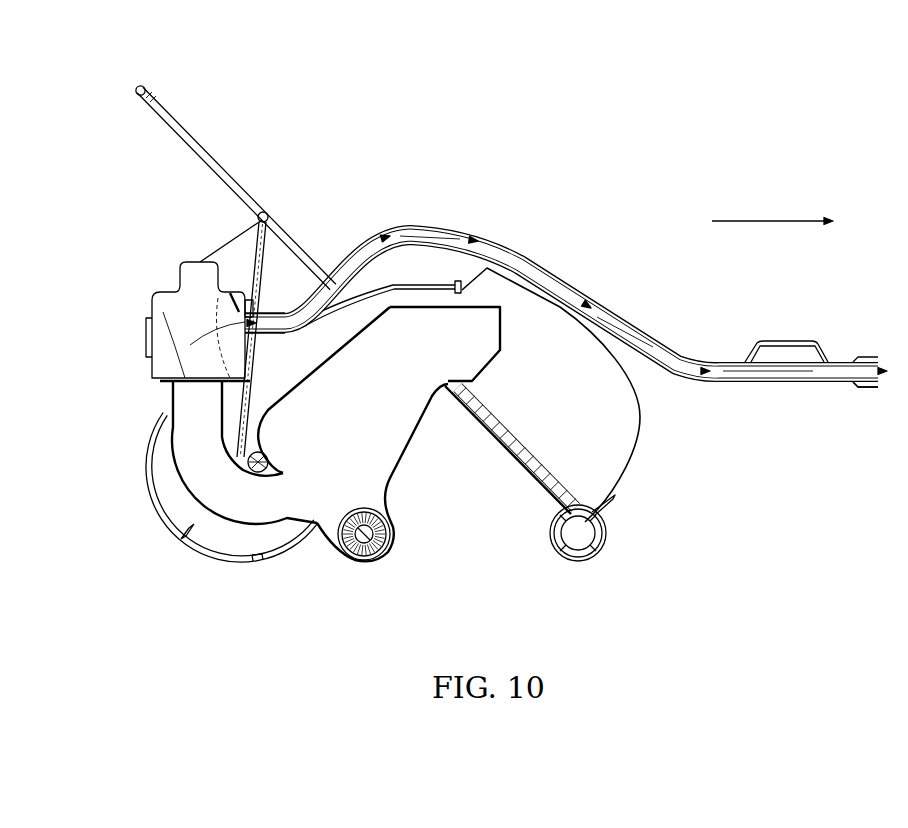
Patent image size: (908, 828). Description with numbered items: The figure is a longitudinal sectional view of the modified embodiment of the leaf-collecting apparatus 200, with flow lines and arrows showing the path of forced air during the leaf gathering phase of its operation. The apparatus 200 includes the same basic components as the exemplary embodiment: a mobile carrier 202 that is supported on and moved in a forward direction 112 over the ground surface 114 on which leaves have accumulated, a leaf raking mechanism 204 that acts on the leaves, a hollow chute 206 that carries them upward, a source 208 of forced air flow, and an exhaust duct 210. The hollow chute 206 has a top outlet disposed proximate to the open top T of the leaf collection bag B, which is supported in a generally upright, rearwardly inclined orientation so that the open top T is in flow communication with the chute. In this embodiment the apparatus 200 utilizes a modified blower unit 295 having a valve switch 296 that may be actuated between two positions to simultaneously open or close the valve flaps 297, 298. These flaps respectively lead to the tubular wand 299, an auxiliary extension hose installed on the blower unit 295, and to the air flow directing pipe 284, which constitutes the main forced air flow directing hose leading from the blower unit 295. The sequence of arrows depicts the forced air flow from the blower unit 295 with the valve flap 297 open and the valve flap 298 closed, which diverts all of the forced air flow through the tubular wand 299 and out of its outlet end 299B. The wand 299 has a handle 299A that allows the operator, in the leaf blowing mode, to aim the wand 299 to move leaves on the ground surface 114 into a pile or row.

The apparatus 200 is at (483, 328).
The mobile carrier 202 is at (298, 218).
The leaf raking mechanism 204 is at (389, 557).
The hollow chute 206 is at (422, 442).
The source of forced air flow 208 is at (182, 282).
The exhaust duct 210 is at (379, 362).
The forward direction 112 is at (722, 221).
The surface 114 is at (371, 599).
The air flow directing pipe 284 is at (210, 500).
The modified blower unit 295 is at (150, 300).
The valve switch 296 is at (145, 333).
The valve flap 297 is at (234, 292).
The valve flap 298 is at (247, 323).
The tubular wand 299 is at (566, 322).
The handle 299A is at (767, 340).
The outlet end 299B is at (880, 384).
The open top T is at (452, 283).
The leaf collection bag B is at (637, 452).